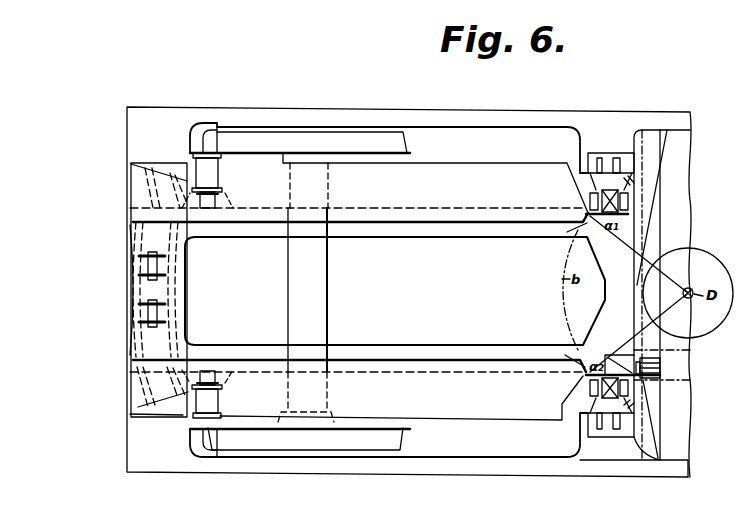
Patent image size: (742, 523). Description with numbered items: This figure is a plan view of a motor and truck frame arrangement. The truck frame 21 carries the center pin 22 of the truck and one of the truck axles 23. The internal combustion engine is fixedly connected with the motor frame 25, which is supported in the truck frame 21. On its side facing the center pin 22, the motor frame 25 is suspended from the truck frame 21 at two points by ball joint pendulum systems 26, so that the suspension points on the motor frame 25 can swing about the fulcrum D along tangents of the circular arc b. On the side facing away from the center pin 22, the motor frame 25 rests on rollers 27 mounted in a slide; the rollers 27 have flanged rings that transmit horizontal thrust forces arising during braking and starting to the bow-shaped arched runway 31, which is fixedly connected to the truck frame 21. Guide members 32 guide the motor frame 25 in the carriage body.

The truck frame 21 is at (632, 122).
The center pin 22 is at (718, 268).
The truck axle 23 is at (292, 290).
The motor frame 25 is at (205, 212).
The ball joint pendulum systems 26 is at (607, 200).
The rollers 27 is at (147, 267).
The arched runway 31 is at (147, 387).
The guide members 32 is at (210, 150).